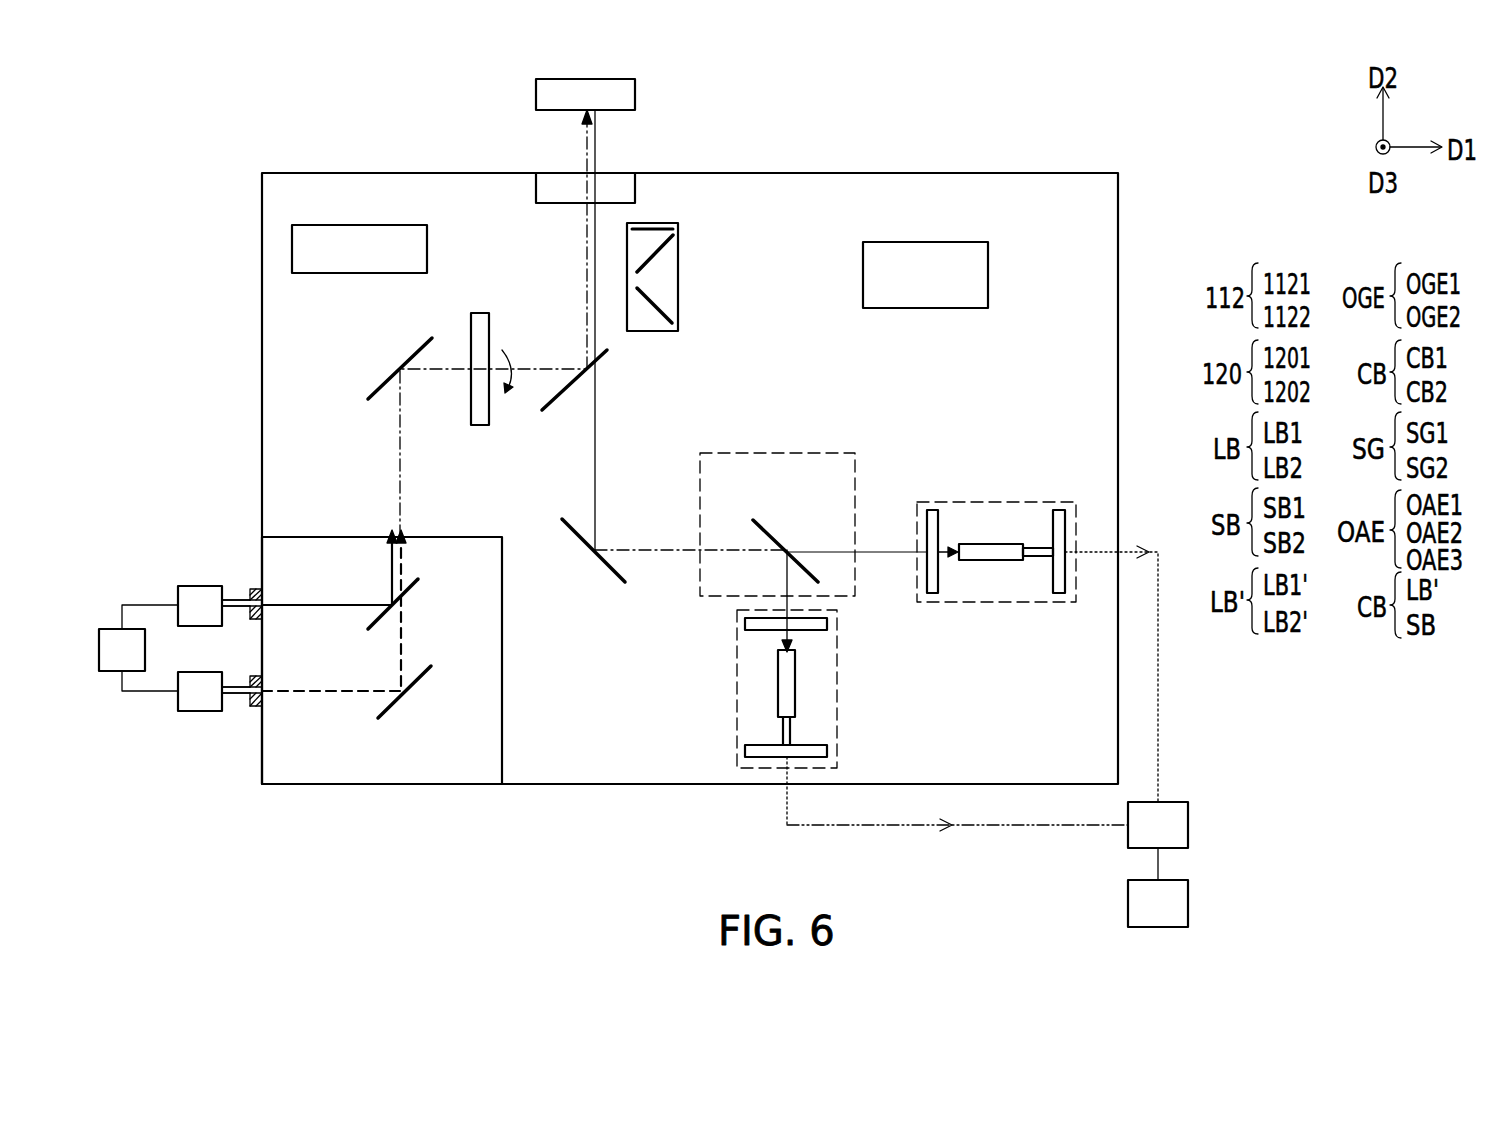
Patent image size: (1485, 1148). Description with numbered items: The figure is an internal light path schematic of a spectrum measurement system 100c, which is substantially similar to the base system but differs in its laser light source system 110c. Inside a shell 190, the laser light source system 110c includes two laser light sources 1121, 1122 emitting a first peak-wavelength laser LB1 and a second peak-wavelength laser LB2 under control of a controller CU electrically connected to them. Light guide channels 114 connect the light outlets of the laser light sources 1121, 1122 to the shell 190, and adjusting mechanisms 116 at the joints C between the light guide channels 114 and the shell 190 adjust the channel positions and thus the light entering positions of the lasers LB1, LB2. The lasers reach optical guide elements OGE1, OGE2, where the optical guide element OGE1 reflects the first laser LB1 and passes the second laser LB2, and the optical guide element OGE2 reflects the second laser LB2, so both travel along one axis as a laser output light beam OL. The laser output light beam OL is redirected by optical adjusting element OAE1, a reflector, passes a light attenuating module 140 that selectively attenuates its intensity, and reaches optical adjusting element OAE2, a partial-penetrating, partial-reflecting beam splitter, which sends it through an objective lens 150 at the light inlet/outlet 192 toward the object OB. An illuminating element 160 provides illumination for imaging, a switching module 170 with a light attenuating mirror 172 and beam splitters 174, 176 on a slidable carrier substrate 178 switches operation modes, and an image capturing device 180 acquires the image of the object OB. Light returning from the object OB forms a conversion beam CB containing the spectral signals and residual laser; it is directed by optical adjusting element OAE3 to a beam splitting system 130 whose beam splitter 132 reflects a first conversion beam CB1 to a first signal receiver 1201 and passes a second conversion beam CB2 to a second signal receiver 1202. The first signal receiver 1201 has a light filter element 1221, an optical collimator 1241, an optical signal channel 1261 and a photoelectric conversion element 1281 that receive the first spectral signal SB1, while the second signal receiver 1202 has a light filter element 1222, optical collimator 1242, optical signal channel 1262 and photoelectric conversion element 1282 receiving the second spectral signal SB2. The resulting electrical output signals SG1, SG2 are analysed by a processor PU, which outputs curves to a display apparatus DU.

The spectrum measurement system 100c is at (1467, 926).
The laser light source system 110c is at (352, 805).
The laser light source 1121 is at (192, 586).
The laser light source 1122 is at (178, 700).
The light guide channel 114 is at (238, 595).
The adjusting mechanism 116 is at (256, 710).
The controller CU is at (145, 648).
The joint C is at (270, 594).
The first peak-wavelength laser LB1 is at (357, 604).
The second peak-wavelength laser LB2 is at (362, 690).
The optical guide element OGE1 is at (410, 590).
The optical guide element OGE2 is at (400, 700).
The laser output light beam OL is at (400, 452).
The optical adjusting element OAE1 is at (415, 343).
The optical adjusting element OAE2 is at (553, 410).
The optical adjusting element OAE3 is at (607, 572).
The light attenuating module 140 is at (480, 425).
The conversion beam CB is at (597, 142).
The object OB is at (536, 95).
The objective lens 150 is at (536, 190).
The illuminating element 160 is at (357, 225).
The switching module 170 is at (698, 317).
The light attenuating mirror 172 is at (655, 227).
The beam splitter 174 is at (657, 257).
The beam splitter 176 is at (660, 325).
The carrier substrate 178 is at (680, 243).
The image capturing device 180 is at (925, 242).
The shell 190 is at (338, 173).
The light inlet/outlet 192 is at (547, 158).
The beam splitting system 130 is at (787, 453).
The beam splitter 132 is at (770, 518).
The first conversion beam CB1 is at (785, 575).
The second conversion beam CB2 is at (828, 550).
The first signal receiver 1201 is at (737, 652).
The light filter element 1221 is at (745, 624).
The optical collimator 1241 is at (783, 688).
The optical signal channel 1261 is at (783, 730).
The photoelectric conversion element 1281 is at (745, 751).
The first spectral signal SB1 is at (795, 633).
The second signal receiver 1202 is at (983, 602).
The light filter element 1222 is at (927, 527).
The optical collimator 1242 is at (995, 545).
The optical signal channel 1262 is at (1040, 547).
The photoelectric conversion element 1282 is at (1060, 522).
The second spectral signal SB2 is at (943, 550).
The electrical output signal SG1 is at (957, 813).
The electrical output signal SG2 is at (1120, 660).
The processor PU is at (1158, 841).
The display apparatus DU is at (1158, 903).